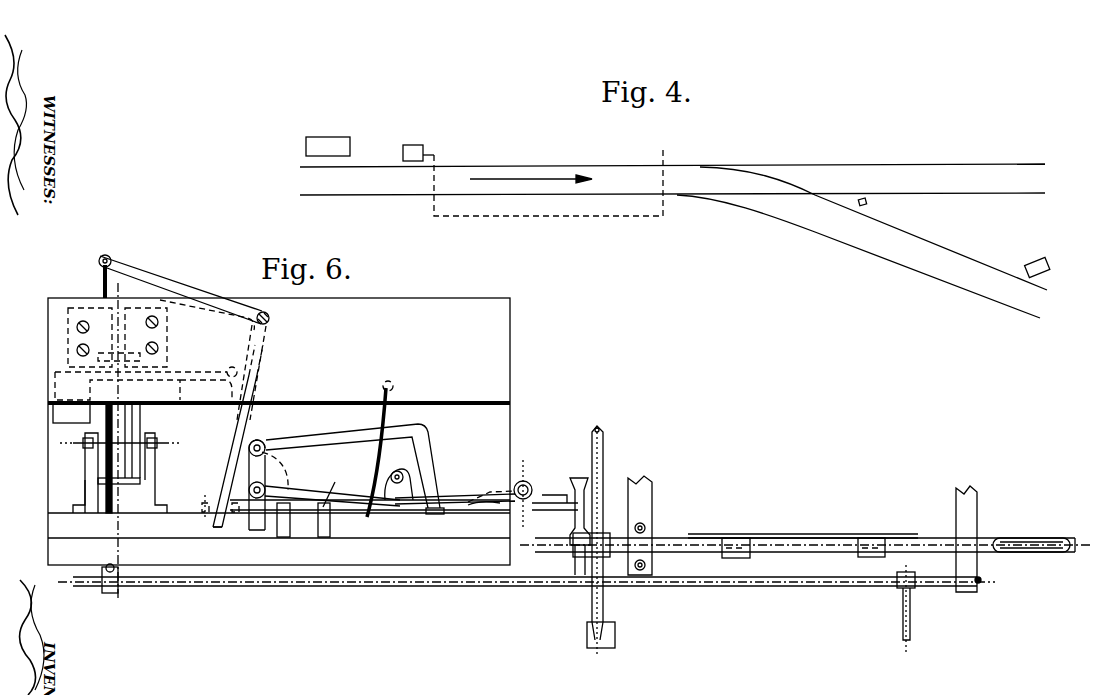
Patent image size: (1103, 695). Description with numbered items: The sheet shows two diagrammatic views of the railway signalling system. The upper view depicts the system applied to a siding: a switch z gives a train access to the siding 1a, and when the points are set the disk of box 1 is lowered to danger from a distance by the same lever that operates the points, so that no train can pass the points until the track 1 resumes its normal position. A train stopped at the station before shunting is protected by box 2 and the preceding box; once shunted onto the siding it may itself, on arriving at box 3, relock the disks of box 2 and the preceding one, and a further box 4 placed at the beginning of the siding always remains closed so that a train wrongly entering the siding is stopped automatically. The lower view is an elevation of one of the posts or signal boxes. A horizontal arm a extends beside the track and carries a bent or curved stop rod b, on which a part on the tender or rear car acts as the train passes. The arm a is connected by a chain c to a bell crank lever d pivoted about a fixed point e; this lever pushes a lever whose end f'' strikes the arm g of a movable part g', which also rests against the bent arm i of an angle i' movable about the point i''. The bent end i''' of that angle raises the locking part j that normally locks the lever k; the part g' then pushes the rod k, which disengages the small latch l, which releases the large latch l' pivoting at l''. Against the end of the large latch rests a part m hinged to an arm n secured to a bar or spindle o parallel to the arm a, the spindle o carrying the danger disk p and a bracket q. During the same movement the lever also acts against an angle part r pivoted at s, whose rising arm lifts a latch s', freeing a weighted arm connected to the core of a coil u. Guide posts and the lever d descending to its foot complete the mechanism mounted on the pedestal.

In FIG. 4, the disk of box No. 1 / main track 1 is at (672, 180).
In FIG. 4, the siding 1a is at (862, 242).
In FIG. 4, the box No. 2 is at (336, 134).
In FIG. 4, the box No. 3 is at (1053, 266).
In FIG. 4, the box at beginning of siding 4 is at (880, 208).
In FIG. 4, the switch z is at (412, 146).
In FIG. 6, the horizontal arm a is at (678, 586).
In FIG. 6, the bent or curved stop rod b is at (912, 615).
In FIG. 6, the chain c is at (107, 497).
In FIG. 6, the bell crank lever d is at (250, 383).
In FIG. 6, the fixed pivot point e is at (269, 318).
In FIG. 6, the end of lever f f'' is at (217, 568).
In FIG. 6, the arm of part g' g is at (289, 534).
In FIG. 6, the movable part g' is at (333, 534).
In FIG. 6, the bent arm of angle i' i is at (324, 478).
In FIG. 6, the angle i' is at (355, 455).
In FIG. 6, the pivot point of angle i'' is at (272, 467).
In FIG. 6, the bent end of angle i''' is at (455, 481).
In FIG. 6, the locking part / locking bar j is at (334, 479).
In FIG. 6, the lever / rod k is at (377, 508).
In FIG. 6, the small bolt or latch l is at (399, 467).
In FIG. 6, the large latch l' is at (491, 475).
In FIG. 6, the pivot of large latch l'' is at (538, 481).
In FIG. 6, the hinged part m is at (555, 486).
In FIG. 6, the arm n is at (589, 540).
In FIG. 6, the bar or spindle o is at (677, 545).
In FIG. 6, the danger disk p is at (782, 534).
In FIG. 6, the bracket q is at (1033, 553).
In FIG. 6, the angle part r is at (188, 373).
In FIG. 6, the pivot of angle part s is at (226, 350).
In FIG. 6, the latch s' is at (138, 340).
In FIG. 6, the coil u is at (133, 423).